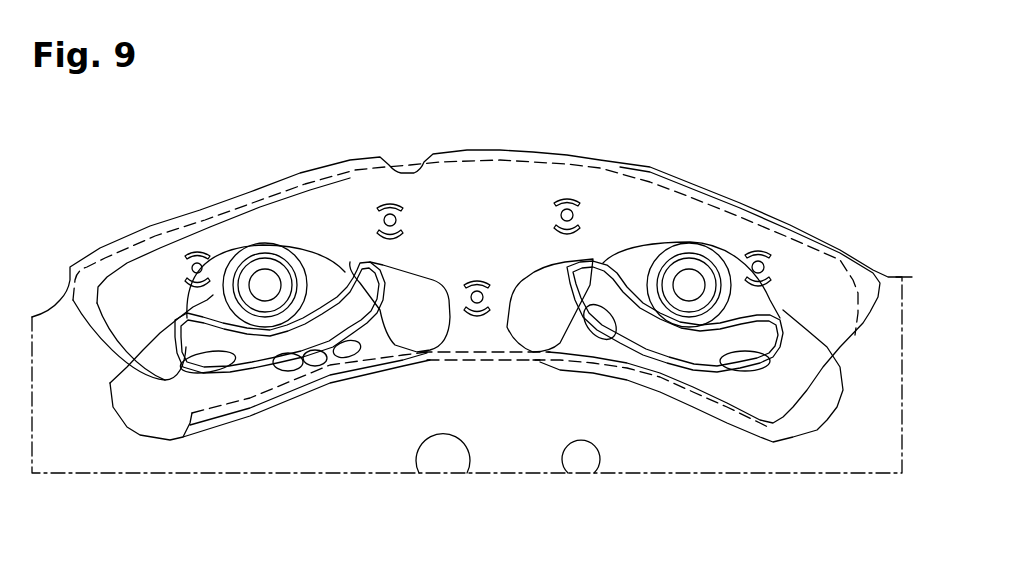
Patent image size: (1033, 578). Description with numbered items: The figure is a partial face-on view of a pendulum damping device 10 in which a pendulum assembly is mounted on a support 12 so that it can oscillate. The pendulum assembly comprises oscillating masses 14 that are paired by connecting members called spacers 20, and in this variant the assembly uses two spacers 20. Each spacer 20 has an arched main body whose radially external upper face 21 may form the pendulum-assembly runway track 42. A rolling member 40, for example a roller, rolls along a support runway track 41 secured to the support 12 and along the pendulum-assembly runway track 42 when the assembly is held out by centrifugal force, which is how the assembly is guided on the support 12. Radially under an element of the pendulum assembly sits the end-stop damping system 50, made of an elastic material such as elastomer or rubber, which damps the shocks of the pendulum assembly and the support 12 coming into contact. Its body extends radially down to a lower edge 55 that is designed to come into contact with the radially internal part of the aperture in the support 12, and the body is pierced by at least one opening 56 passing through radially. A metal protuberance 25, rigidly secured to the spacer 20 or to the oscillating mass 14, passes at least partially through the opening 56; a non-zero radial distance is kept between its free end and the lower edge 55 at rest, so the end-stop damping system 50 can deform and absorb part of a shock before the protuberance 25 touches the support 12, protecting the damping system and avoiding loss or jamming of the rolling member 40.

The pendulum damping device 10 is at (110, 200).
The support 12 is at (840, 448).
The oscillating mass 14 is at (870, 293).
The spacer 20 is at (750, 339).
The radially external upper face 21 is at (236, 322).
The protuberance 25 is at (288, 362).
The rolling member 40 is at (690, 276).
The support runway track 41 is at (300, 250).
The pendulum-assembly runway track 42 is at (213, 287).
The end-stop damping system 50 is at (230, 362).
The lower edge 55 is at (347, 355).
The opening 56 is at (314, 360).